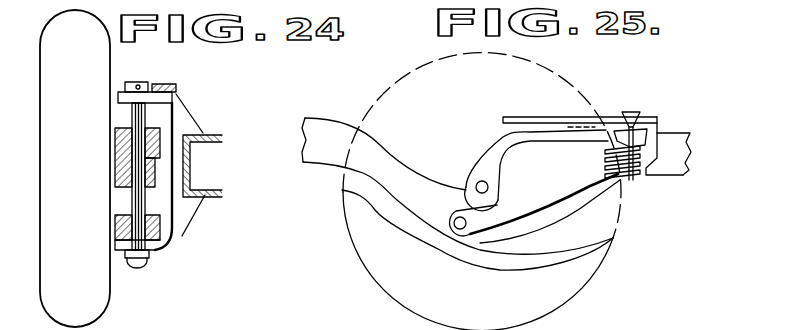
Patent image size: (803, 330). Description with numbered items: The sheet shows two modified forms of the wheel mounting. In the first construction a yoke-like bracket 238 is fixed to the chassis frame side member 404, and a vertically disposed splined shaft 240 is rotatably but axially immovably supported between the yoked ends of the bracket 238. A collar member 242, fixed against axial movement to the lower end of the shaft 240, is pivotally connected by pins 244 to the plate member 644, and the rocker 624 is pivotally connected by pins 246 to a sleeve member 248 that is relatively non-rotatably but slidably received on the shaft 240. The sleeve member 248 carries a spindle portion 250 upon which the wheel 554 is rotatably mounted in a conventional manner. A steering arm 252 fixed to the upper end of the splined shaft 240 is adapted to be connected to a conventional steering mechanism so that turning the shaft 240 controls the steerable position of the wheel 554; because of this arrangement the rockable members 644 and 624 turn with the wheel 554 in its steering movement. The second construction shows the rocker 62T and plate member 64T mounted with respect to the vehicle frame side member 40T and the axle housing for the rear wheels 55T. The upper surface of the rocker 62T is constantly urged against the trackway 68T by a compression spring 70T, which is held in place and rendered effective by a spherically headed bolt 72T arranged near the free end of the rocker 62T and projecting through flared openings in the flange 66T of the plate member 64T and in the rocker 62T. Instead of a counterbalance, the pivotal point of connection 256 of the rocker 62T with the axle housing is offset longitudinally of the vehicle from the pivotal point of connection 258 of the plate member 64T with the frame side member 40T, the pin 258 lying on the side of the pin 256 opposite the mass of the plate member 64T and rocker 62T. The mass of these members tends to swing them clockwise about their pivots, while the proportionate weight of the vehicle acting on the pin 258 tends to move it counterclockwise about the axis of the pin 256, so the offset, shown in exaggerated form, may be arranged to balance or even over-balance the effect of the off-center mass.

In FIG. 24, the wheel 554 is at (102, 52).
In FIG. 24, the steering arm 252 is at (157, 82).
In FIG. 24, the splined shaft 240 is at (145, 113).
In FIG. 24, the rocker 624 is at (117, 128).
In FIG. 24, the pins 246 is at (115, 143).
In FIG. 24, the spindle portion 250 is at (117, 173).
In FIG. 24, the chassis frame side member 404 is at (188, 153).
In FIG. 24, the sleeve member 248 is at (173, 183).
In FIG. 24, the plate member 644 is at (115, 217).
In FIG. 24, the yoke-like bracket 238 is at (192, 220).
In FIG. 24, the pins 244 is at (115, 230).
In FIG. 24, the collar member 242 is at (146, 250).
In FIG. 25, the flange 66T is at (503, 117).
In FIG. 25, the spherically headed bolt 72T is at (640, 100).
In FIG. 25, the trackway 68T is at (657, 117).
In FIG. 25, the vehicle frame side member 40T is at (692, 134).
In FIG. 25, the pivotal point of connection 256 is at (480, 182).
In FIG. 25, the rocker 62T is at (587, 141).
In FIG. 25, the plate member 64T is at (507, 200).
In FIG. 25, the compression spring 70T is at (640, 178).
In FIG. 25, the rear wheels 55T is at (365, 245).
In FIG. 25, the pivotal point of connection 258 is at (457, 226).